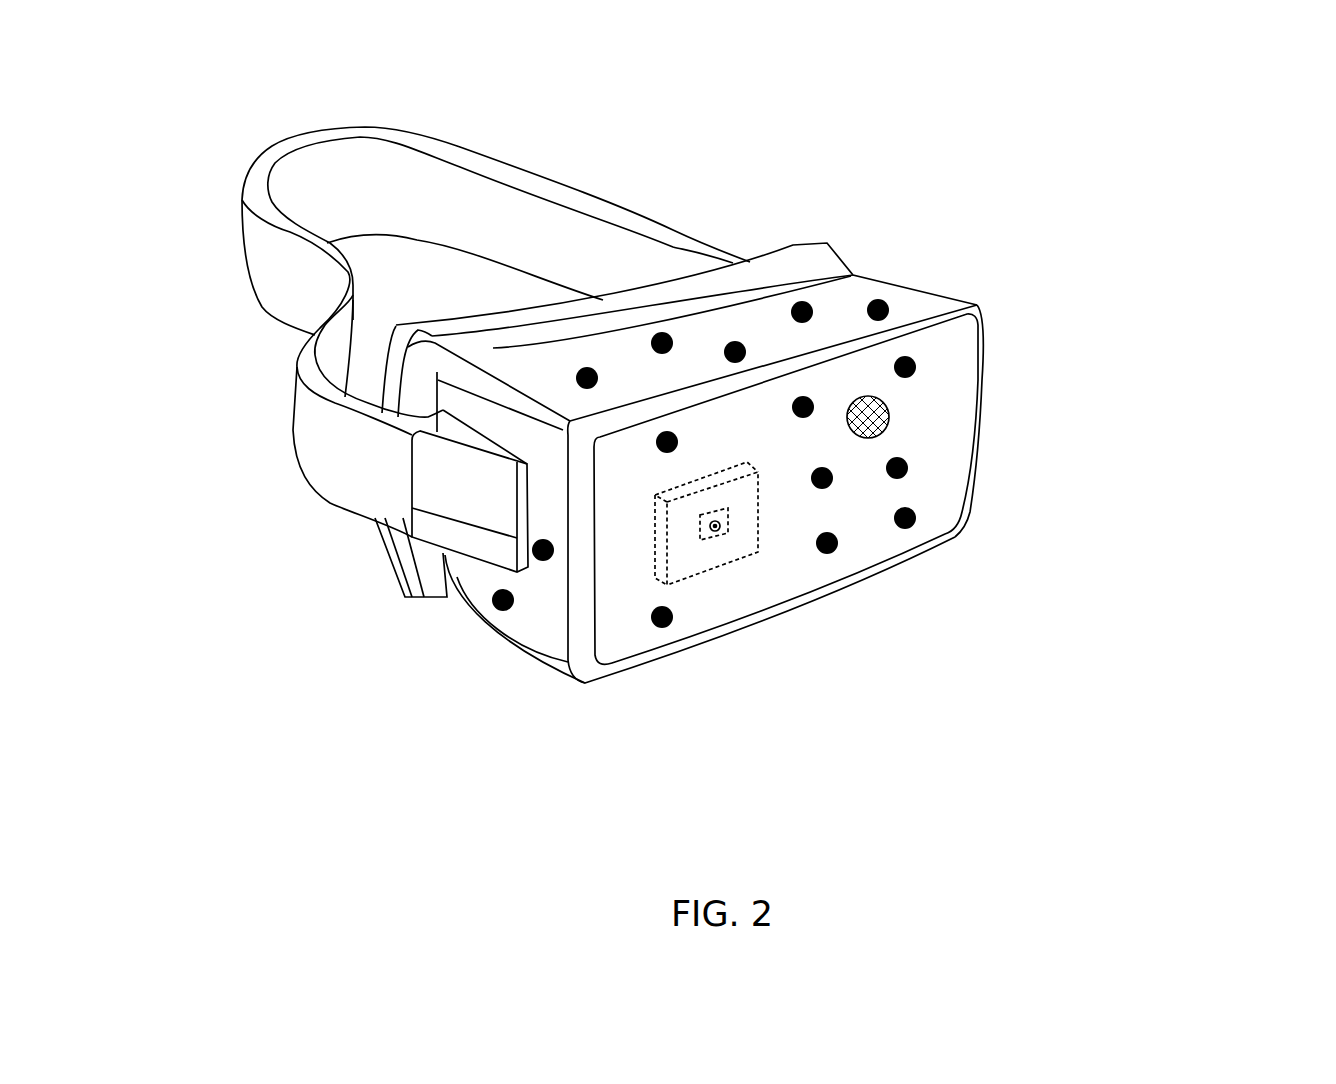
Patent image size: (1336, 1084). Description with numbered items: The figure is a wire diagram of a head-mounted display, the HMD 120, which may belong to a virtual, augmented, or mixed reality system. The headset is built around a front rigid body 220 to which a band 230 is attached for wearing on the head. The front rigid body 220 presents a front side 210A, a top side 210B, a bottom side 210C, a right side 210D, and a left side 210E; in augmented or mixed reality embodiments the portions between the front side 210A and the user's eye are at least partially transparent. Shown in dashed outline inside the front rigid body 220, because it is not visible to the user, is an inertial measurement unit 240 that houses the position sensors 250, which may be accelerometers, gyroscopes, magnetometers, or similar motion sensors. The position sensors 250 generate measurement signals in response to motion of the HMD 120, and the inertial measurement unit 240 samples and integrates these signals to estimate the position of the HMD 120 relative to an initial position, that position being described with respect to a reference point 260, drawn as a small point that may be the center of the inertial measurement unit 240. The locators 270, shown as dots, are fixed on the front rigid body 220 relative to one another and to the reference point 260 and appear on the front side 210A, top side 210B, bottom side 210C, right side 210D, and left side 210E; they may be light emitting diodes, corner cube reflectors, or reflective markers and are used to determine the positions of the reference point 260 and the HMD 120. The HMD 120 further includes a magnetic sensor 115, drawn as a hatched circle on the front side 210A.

The HMD 120 is at (114, 161).
The magnetic sensor 115 is at (889, 408).
The front side 210A is at (628, 622).
The top side 210B is at (538, 366).
The bottom side 210C is at (481, 656).
The right side 210D is at (538, 596).
The left side 210E is at (945, 287).
The front rigid body 220 is at (977, 303).
The band 230 is at (620, 200).
The inertial measurement unit 240 is at (757, 547).
The position sensors 250 is at (701, 547).
The reference point 260 is at (718, 532).
The locators 270 is at (912, 521).